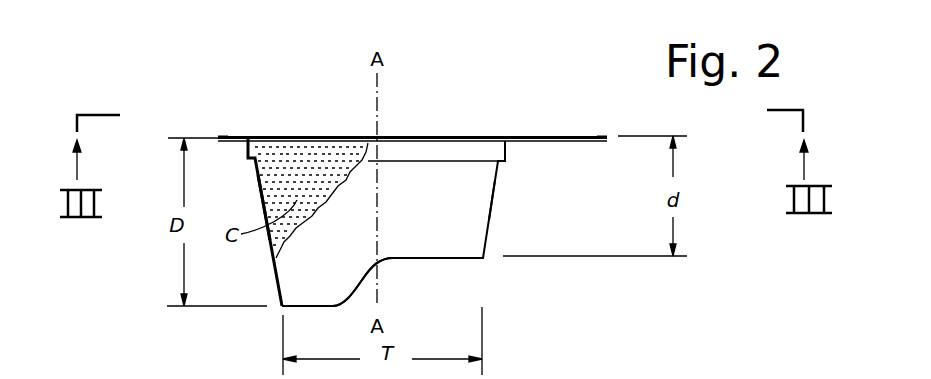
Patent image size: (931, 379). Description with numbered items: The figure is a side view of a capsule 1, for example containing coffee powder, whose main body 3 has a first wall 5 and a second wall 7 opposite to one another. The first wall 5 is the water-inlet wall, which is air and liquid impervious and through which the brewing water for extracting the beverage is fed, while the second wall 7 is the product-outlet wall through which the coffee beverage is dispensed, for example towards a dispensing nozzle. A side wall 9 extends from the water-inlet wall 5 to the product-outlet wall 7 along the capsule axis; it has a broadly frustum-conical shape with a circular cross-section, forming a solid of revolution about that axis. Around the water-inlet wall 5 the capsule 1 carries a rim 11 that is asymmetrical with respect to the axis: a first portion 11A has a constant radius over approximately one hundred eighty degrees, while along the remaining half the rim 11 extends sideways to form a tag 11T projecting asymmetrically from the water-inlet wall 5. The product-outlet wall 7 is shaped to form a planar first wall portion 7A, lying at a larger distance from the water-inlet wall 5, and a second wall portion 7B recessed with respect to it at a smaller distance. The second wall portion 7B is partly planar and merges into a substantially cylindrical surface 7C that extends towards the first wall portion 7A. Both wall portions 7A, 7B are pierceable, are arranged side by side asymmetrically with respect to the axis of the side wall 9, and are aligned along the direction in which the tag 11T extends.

The capsule 1 is at (436, 130).
The main body 3 is at (505, 197).
The first wall 5 is at (469, 134).
The second wall 7 is at (437, 262).
The first wall portion 7A is at (317, 307).
The second wall portion 7B is at (458, 261).
The substantially cylindrical surface 7C is at (370, 275).
The side wall 9 is at (264, 200).
The rim 11 is at (550, 147).
The first portion of the rim 11A is at (228, 148).
The tag 11T is at (588, 133).